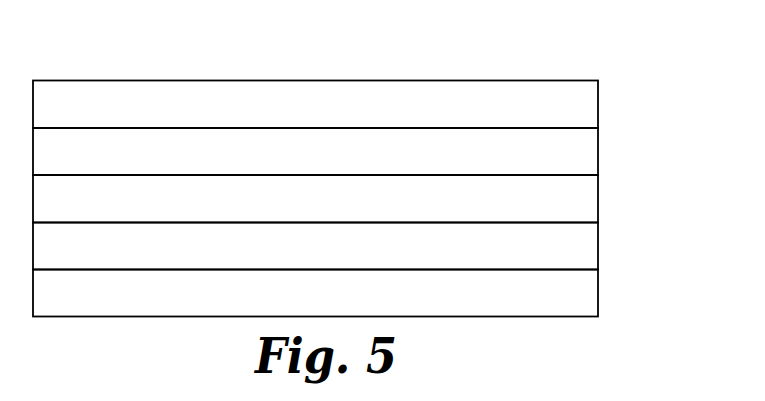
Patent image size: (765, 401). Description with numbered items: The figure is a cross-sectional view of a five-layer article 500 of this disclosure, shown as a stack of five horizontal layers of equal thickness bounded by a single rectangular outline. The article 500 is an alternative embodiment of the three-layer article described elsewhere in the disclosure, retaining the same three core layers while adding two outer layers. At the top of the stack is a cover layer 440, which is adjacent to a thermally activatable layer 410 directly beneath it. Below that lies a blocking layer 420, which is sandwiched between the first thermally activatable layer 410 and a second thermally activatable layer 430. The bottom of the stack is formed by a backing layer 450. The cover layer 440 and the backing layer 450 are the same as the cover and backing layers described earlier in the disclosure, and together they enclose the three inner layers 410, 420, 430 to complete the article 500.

The article 500 is at (361, 164).
The cover layer 440 is at (585, 107).
The thermally activatable layer 410 is at (585, 153).
The blocking layer 420 is at (585, 202).
The thermally activatable layer 430 is at (585, 248).
The backing layer 450 is at (585, 295).